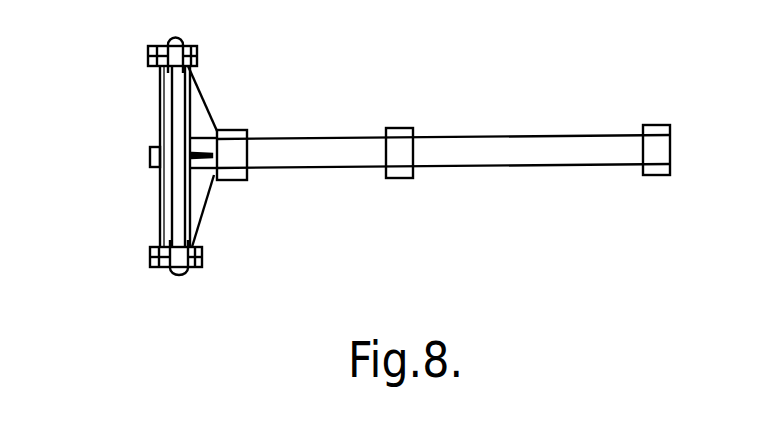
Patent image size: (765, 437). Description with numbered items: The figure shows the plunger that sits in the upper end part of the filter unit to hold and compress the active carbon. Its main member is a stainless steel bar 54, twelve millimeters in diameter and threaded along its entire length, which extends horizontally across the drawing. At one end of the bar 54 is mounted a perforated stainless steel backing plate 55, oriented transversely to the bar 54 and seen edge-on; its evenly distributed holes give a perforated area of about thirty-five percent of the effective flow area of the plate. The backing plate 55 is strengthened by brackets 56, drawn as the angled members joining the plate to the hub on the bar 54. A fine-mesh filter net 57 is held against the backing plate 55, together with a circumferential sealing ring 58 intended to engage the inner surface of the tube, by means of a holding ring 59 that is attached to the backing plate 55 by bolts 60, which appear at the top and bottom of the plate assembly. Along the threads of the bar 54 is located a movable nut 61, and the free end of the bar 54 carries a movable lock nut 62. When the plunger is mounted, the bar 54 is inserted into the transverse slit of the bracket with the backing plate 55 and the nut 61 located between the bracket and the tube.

The bar 54 is at (488, 136).
The backing plate 55 is at (198, 102).
The brackets 56 is at (212, 188).
The filter net 57 is at (187, 213).
The sealing ring 58 is at (180, 276).
The holding ring 59 is at (159, 133).
The bolts 60 is at (147, 58).
The nut 61 is at (395, 127).
The lock nut 62 is at (672, 170).